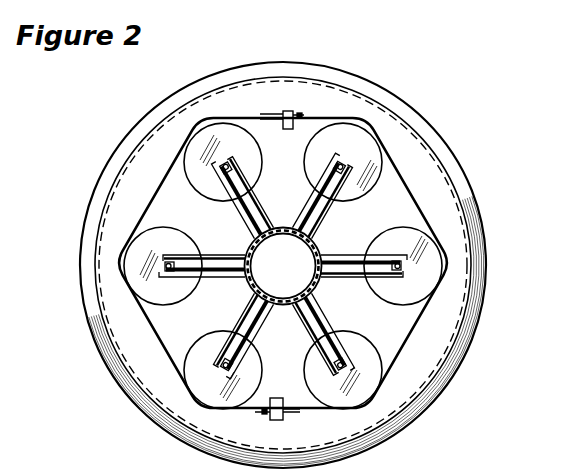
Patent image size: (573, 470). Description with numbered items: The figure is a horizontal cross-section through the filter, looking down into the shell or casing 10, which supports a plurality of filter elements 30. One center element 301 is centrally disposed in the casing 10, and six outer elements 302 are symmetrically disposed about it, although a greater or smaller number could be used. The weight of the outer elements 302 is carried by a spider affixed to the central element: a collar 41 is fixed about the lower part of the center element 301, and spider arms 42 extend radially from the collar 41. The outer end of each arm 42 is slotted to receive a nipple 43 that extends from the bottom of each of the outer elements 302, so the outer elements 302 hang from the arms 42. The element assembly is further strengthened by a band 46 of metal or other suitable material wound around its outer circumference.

The shell or casing 10 is at (438, 134).
The filter elements 30 is at (391, 232).
The center element 301 is at (283, 266).
The outer elements 302 is at (283, 266).
The collar 41 is at (318, 280).
The spider arms 42 is at (373, 278).
The nipple 43 is at (348, 366).
The band 46 is at (418, 322).